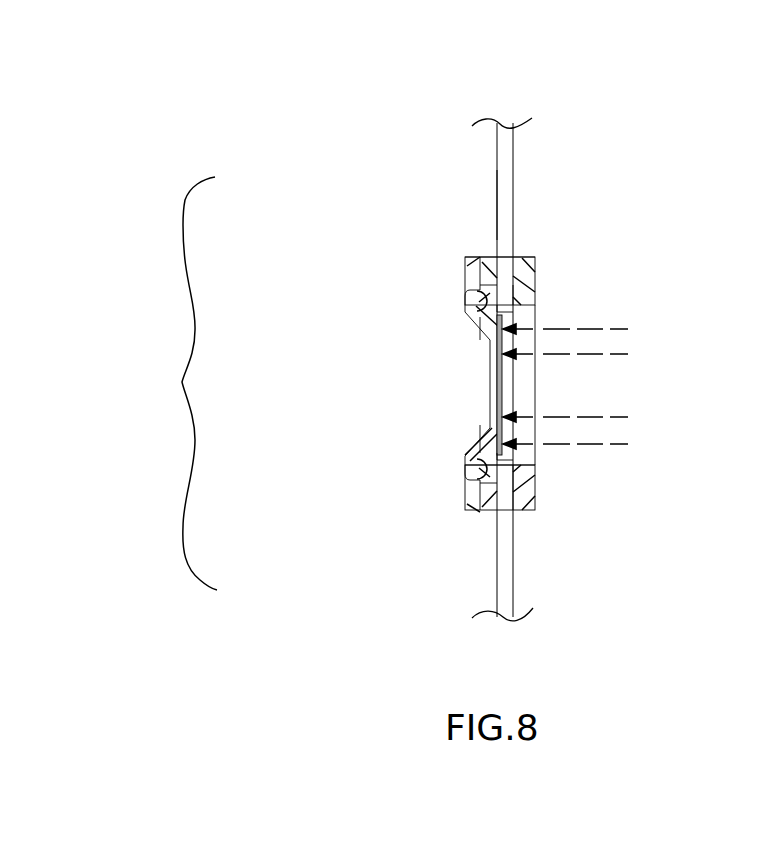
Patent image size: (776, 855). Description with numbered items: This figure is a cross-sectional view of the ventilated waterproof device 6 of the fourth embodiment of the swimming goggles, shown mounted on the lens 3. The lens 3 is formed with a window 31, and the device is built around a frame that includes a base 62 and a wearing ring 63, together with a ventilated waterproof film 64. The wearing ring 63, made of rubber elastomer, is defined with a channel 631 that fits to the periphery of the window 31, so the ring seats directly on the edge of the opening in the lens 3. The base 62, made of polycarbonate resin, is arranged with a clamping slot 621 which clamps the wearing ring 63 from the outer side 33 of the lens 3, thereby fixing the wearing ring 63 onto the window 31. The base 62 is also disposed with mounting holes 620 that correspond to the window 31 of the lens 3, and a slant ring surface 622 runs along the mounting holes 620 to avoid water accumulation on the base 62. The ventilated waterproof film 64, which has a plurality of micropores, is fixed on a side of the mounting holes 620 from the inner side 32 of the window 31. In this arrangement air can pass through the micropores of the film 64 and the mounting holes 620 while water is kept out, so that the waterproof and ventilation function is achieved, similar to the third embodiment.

The lens 3 is at (505, 151).
The ventilated waterproof device 6 is at (135, 345).
The window 31 is at (513, 486).
The inner side 32 is at (512, 548).
The outer side 33 is at (495, 173).
The base 62 is at (470, 302).
The wearing ring 63 is at (508, 298).
The ventilated waterproof film 64 is at (502, 390).
The mounting holes 620 is at (495, 350).
The clamping slot 621 is at (480, 326).
The slant ring surface 622 is at (485, 326).
The channel 631 is at (497, 262).